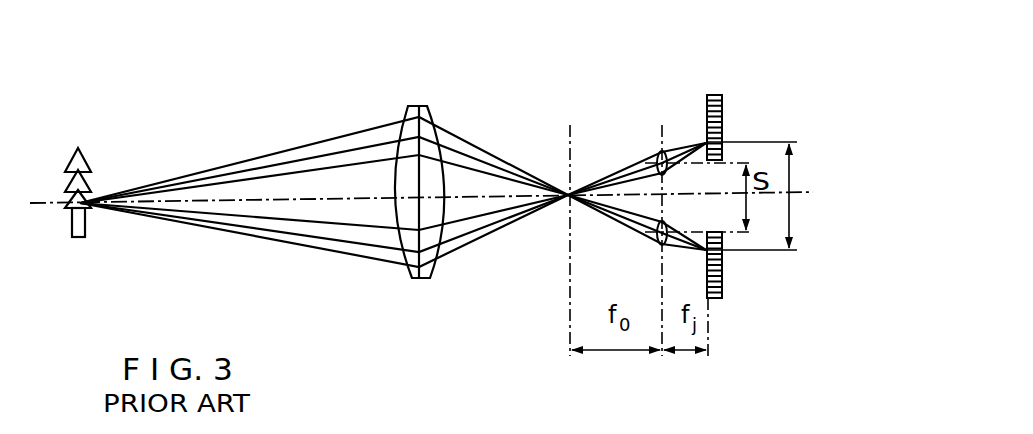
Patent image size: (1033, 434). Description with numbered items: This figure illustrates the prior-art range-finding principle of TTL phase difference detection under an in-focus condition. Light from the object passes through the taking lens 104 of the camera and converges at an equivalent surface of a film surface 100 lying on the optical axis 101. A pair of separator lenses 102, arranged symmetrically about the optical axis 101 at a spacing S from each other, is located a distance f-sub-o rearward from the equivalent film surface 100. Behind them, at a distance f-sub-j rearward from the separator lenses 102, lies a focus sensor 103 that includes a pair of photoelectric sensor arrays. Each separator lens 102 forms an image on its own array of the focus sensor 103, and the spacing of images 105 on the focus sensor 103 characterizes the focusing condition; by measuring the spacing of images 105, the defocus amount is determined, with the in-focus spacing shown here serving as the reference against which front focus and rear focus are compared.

The equivalent surface of a film surface 100 is at (572, 333).
The optical axis 101 is at (797, 188).
The separator lenses 102 is at (656, 152).
The focus sensor 103 is at (708, 95).
The taking lens 104 is at (410, 106).
The spacing of images 105 is at (790, 218).